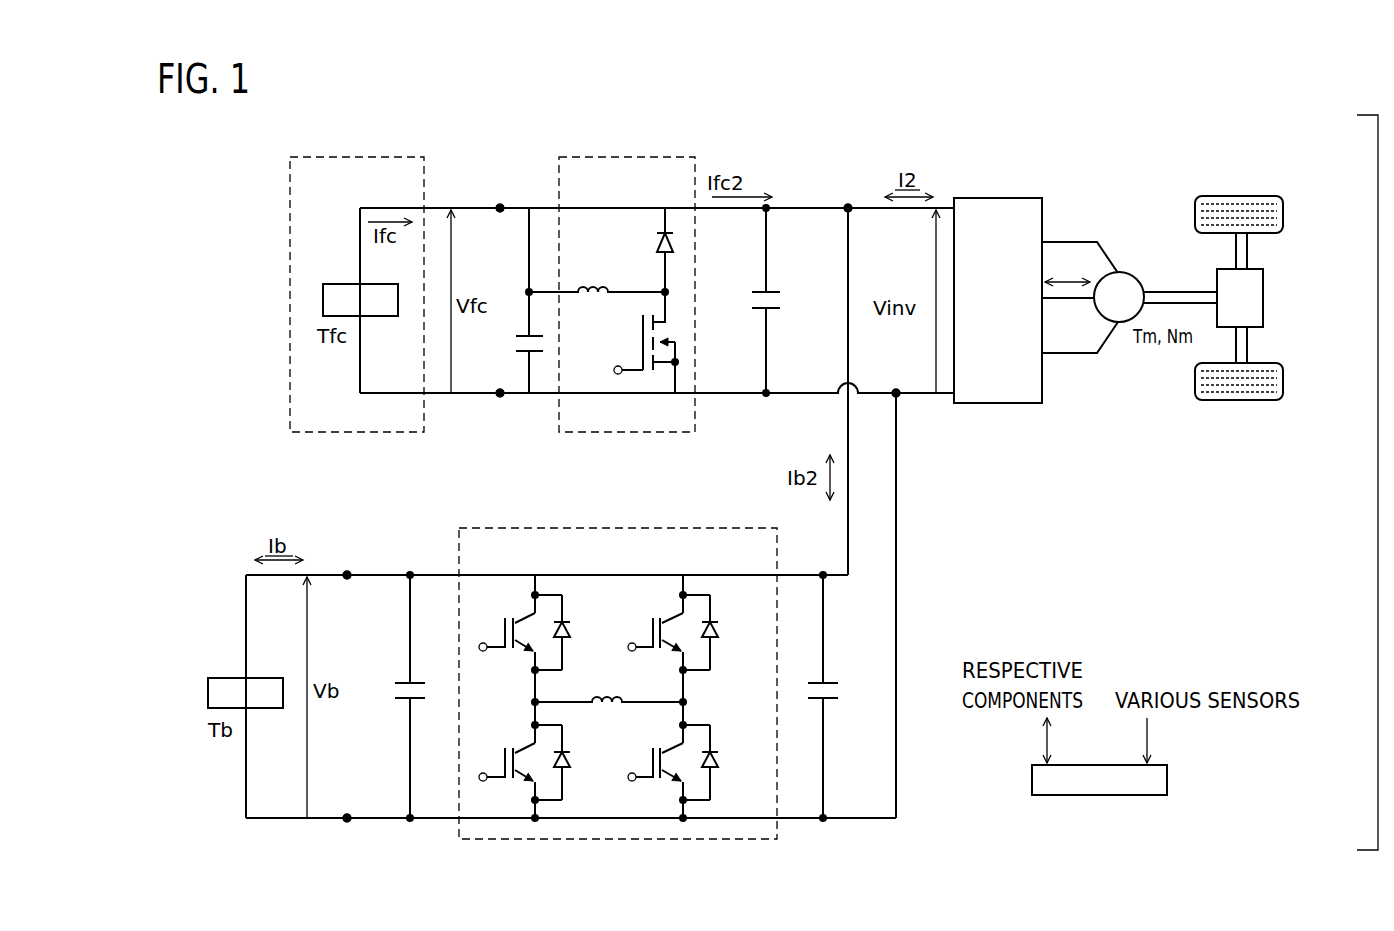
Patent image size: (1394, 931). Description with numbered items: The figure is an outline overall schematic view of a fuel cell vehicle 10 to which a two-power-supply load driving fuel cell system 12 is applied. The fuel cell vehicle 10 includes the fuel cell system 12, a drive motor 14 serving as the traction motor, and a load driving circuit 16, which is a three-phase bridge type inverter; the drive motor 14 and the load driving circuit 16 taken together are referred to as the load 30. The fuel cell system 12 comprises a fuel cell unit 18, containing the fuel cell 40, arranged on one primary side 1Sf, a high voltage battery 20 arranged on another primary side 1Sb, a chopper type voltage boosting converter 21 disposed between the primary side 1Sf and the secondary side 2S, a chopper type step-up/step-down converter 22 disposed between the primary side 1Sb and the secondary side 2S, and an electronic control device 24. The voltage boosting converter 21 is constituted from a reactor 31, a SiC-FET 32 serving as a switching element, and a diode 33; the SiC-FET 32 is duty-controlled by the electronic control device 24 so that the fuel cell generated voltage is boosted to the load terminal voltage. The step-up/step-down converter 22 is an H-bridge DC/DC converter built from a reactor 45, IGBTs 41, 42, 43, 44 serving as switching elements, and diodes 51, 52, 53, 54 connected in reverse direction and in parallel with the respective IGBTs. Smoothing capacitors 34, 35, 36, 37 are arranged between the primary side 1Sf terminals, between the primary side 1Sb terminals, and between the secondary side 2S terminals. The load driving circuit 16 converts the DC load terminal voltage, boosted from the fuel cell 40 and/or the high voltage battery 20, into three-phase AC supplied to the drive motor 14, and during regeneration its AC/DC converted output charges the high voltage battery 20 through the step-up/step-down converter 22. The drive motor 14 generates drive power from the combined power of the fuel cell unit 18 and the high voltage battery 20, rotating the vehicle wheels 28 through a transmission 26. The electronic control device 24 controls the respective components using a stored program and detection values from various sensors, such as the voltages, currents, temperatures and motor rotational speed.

The fuel cell vehicle 10 is at (692, 115).
The fuel cell system 12 is at (828, 140).
The drive motor 14 is at (1120, 272).
The load driving circuit 16 is at (1022, 198).
The fuel cell unit 18 is at (357, 157).
The high voltage battery 20 is at (228, 678).
The chopper type voltage boosting converter 21 is at (630, 157).
The chopper type step-up/step-down converter 22 is at (557, 528).
The electronic control device 24 is at (1168, 780).
The transmission 26 is at (1264, 297).
The vehicle wheels 28 is at (1284, 210).
The load 30 is at (1106, 138).
The reactor 31 is at (591, 283).
The SiC-FET 32 is at (641, 340).
The diode 33 is at (658, 242).
The smoothing capacitor 34 is at (515, 344).
The smoothing capacitor 35 is at (752, 297).
The smoothing capacitor 36 is at (395, 690).
The smoothing capacitor 37 is at (840, 693).
The fuel cell 40 is at (347, 284).
The IGBT 41 is at (503, 632).
The IGBT 42 is at (651, 762).
The IGBT 43 is at (651, 632).
The IGBT 44 is at (503, 762).
The reactor 45 is at (606, 695).
The diode 51 is at (572, 633).
The diode 52 is at (720, 763).
The diode 53 is at (720, 633).
The diode 54 is at (572, 763).
The primary side 1Sf is at (500, 206).
The primary side 1Sb is at (347, 572).
The secondary side 2S is at (848, 206).